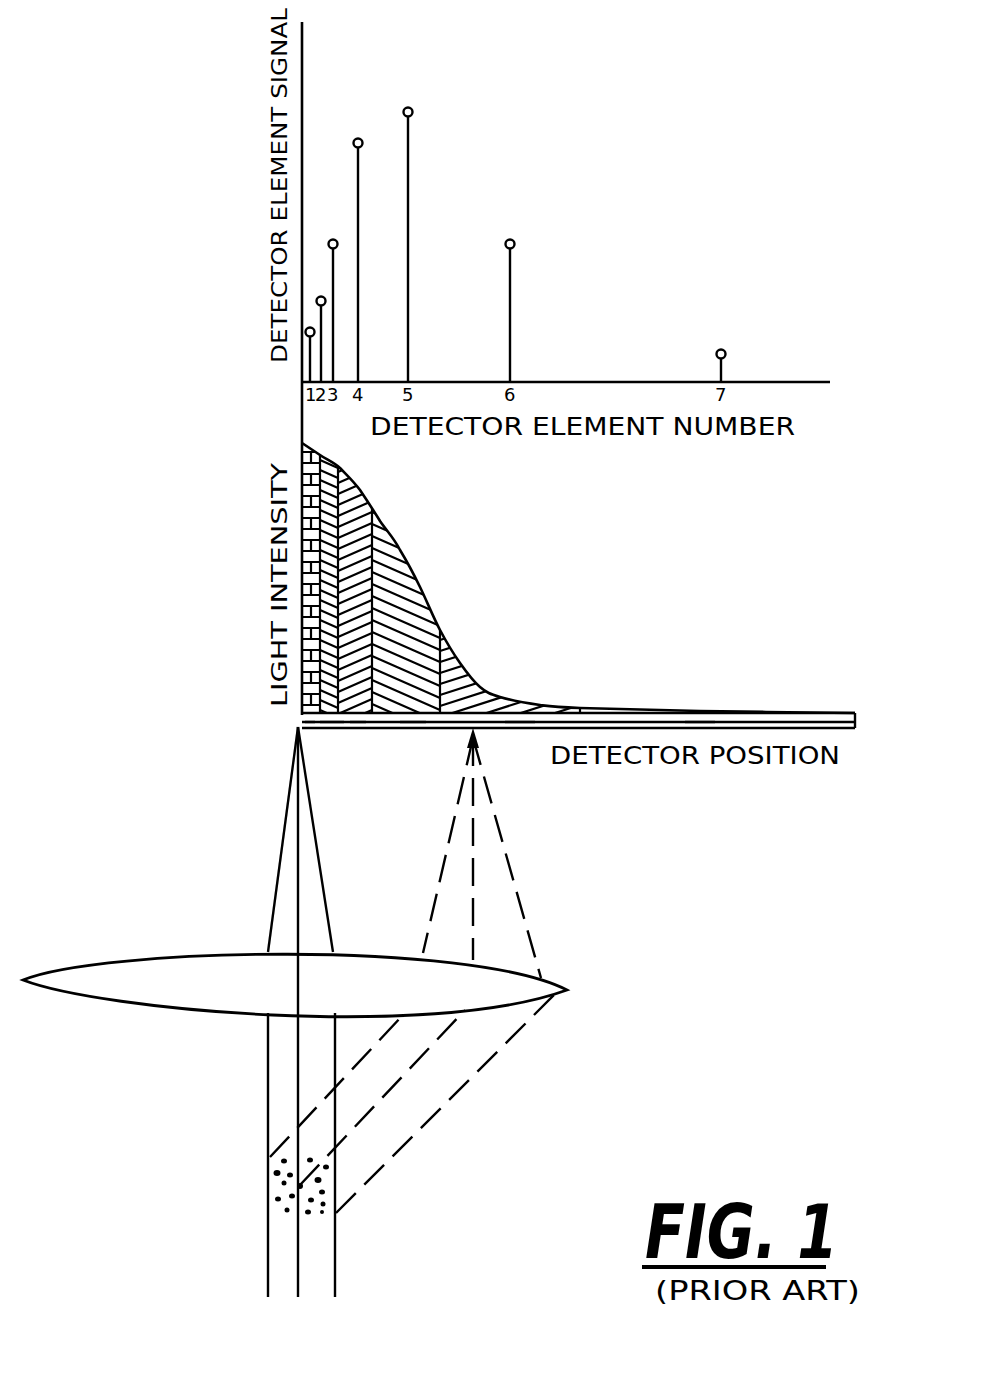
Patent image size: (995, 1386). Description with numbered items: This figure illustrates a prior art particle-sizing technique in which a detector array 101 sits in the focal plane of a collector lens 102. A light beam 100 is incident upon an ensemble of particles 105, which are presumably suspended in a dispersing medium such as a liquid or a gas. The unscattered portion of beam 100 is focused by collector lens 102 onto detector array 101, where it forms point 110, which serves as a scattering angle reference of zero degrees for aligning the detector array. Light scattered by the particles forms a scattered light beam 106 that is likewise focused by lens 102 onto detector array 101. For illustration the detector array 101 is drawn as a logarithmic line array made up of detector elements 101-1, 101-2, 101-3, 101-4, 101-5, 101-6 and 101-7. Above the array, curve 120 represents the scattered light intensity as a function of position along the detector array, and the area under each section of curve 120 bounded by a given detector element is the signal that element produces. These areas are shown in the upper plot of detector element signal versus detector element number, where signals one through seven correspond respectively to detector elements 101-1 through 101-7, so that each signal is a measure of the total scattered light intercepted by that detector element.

The light beam 100 is at (336, 1260).
The detector array 101 is at (855, 733).
The detector element 101-1 is at (309, 729).
The detector element 101-2 is at (325, 729).
The detector element 101-3 is at (338, 729).
The detector element 101-4 is at (358, 729).
The detector element 101-5 is at (413, 729).
The detector element 101-6 is at (520, 729).
The detector element 101-7 is at (700, 729).
The collector lens 102 is at (567, 990).
The ensemble of particles 105 is at (277, 1180).
The scattered light beam 106 is at (480, 1062).
The point 110 is at (298, 727).
The curve 120 is at (420, 587).